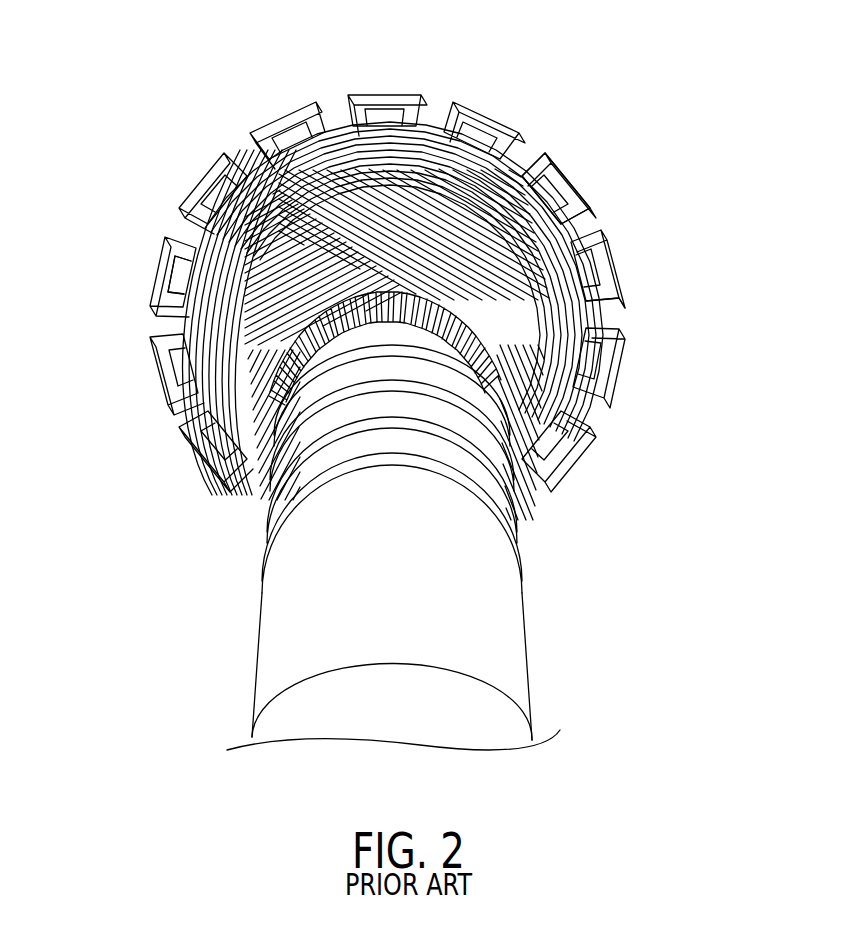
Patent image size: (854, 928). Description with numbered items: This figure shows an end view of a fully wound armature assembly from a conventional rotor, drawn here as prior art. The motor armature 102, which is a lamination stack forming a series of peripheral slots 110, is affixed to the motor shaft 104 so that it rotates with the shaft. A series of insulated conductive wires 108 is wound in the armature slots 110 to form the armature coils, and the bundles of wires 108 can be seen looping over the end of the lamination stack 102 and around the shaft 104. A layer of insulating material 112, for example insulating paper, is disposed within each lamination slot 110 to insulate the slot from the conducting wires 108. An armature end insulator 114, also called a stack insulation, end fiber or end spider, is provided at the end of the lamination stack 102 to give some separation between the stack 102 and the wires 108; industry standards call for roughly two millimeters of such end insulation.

The motor armature 102 is at (472, 73).
The motor shaft 104 is at (532, 582).
The insulated conductive wires 108 is at (628, 352).
The peripheral slots 110 is at (502, 133).
The insulating material 112 is at (617, 262).
The armature end insulator 114 is at (560, 180).